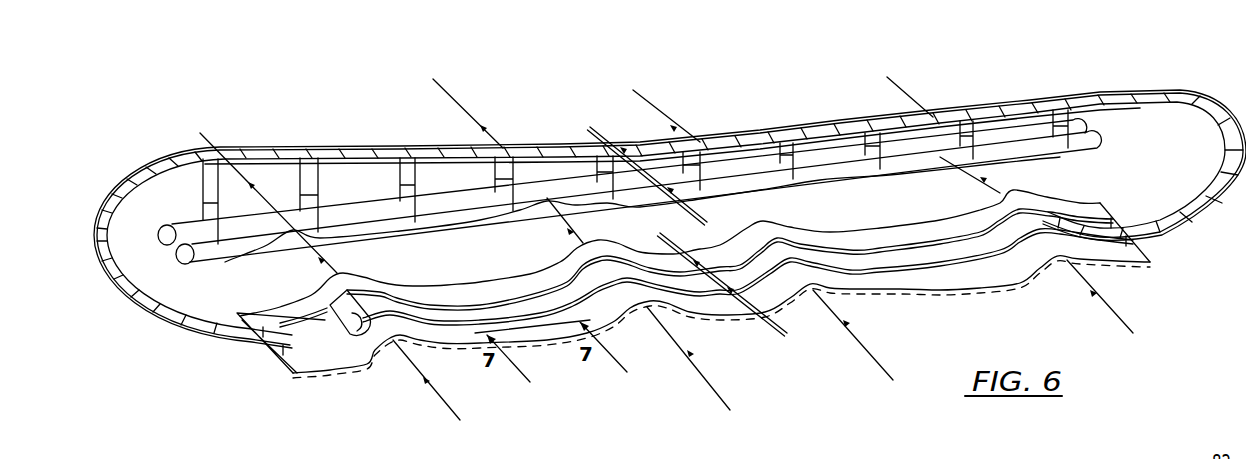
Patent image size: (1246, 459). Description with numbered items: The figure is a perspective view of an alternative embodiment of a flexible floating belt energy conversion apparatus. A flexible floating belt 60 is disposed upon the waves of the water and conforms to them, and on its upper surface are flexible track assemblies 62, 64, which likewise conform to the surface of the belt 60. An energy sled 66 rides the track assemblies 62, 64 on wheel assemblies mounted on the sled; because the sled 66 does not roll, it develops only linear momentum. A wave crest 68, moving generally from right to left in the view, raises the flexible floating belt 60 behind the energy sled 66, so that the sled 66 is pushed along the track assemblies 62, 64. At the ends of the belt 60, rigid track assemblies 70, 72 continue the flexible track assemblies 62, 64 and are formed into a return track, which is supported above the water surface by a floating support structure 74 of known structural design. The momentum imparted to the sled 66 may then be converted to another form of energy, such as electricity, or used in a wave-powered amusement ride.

The flexible floating belt 60 is at (1005, 268).
The flexible track assembly 62 is at (913, 270).
The flexible track assembly 64 is at (937, 240).
The energy sled 66 is at (355, 320).
The wave crest 68 is at (438, 407).
The rigid track assembly 70 is at (207, 333).
The rigid track assembly 72 is at (197, 321).
The floating support structure 74 is at (820, 176).